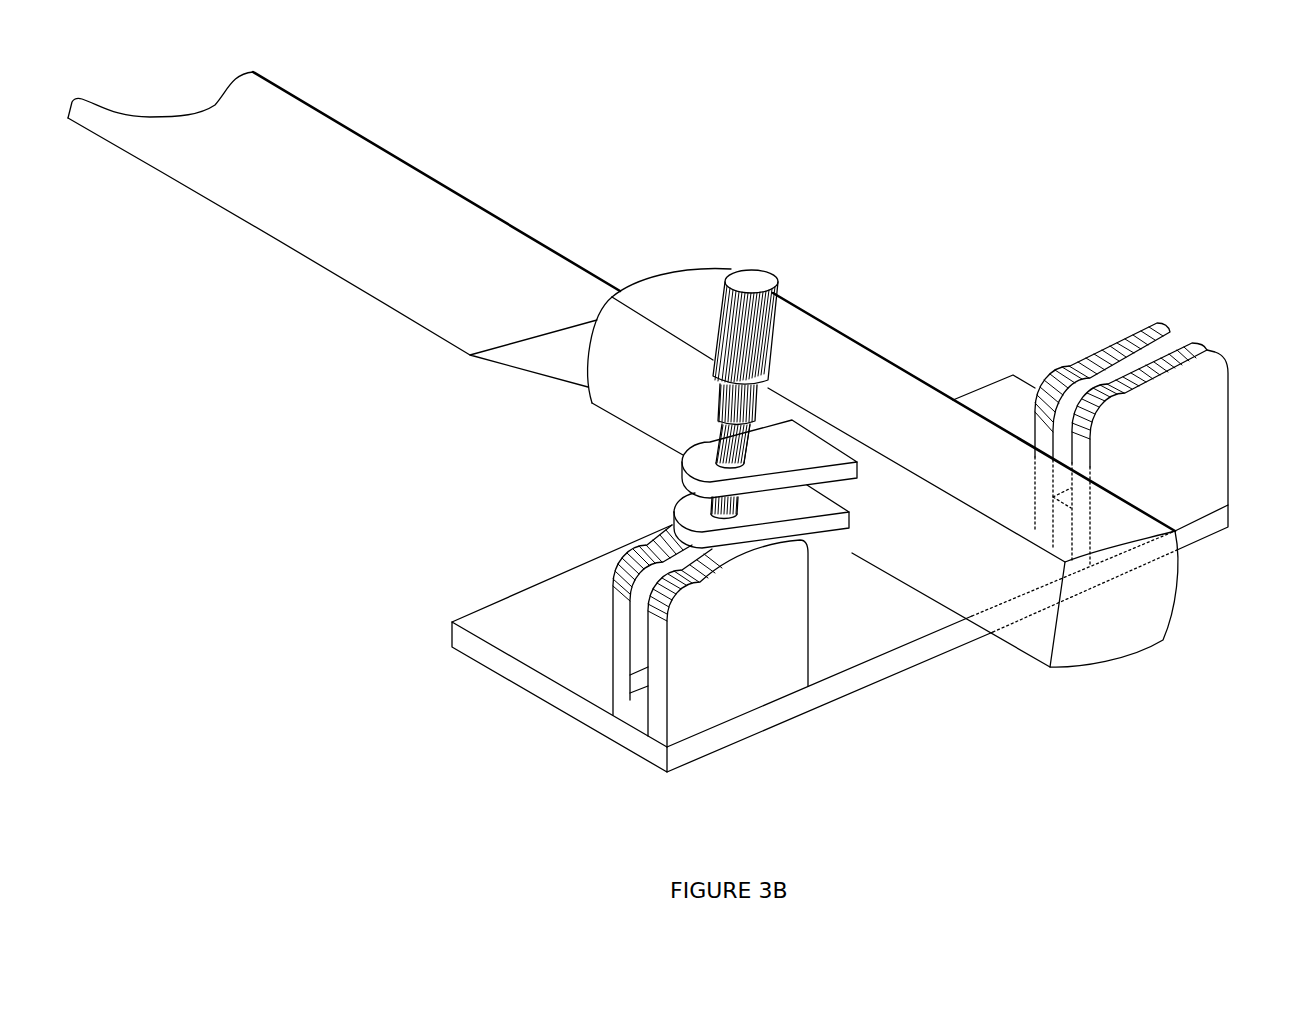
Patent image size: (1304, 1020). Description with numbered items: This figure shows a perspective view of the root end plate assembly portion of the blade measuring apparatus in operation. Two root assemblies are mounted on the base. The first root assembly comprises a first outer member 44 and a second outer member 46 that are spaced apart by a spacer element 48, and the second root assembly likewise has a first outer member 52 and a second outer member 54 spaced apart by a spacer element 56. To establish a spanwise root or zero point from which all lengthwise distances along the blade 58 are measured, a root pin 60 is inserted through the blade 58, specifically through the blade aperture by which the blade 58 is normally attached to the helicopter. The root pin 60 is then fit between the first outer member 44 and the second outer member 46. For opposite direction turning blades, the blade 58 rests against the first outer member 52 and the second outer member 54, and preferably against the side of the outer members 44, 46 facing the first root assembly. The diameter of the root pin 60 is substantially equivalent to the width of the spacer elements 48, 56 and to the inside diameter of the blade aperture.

The first outer member 44 is at (622, 700).
The second outer member 46 is at (660, 725).
The spacer element 48 is at (640, 715).
The first outer member 52 is at (1165, 327).
The second outer member 54 is at (1207, 349).
The spacer element 56 is at (1060, 528).
The blade 58 is at (840, 357).
The root pin 60 is at (758, 283).